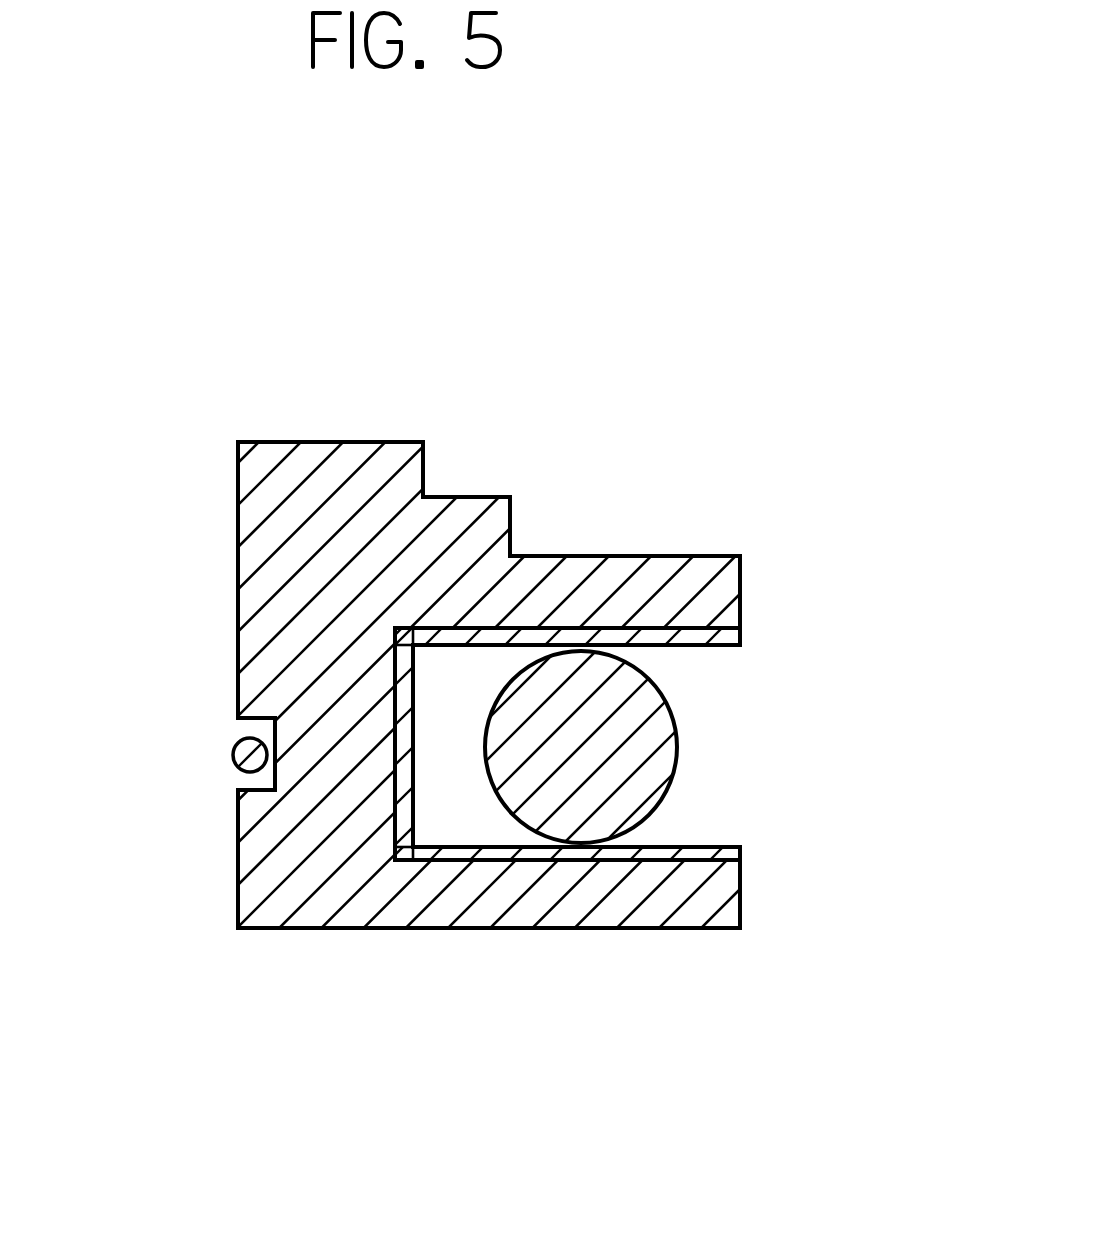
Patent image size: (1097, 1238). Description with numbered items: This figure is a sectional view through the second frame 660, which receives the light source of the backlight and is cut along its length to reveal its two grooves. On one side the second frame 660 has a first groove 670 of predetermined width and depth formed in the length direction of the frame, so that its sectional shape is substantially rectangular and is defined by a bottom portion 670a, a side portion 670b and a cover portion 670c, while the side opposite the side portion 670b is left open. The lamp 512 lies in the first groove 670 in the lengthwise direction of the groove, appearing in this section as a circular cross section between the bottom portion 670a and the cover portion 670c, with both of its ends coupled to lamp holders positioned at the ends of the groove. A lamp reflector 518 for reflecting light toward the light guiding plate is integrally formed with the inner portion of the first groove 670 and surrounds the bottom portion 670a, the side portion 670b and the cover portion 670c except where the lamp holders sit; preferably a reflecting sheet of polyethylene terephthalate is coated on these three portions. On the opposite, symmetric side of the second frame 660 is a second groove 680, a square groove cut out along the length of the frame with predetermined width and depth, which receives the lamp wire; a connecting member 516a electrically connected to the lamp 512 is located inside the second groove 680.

The second frame 660 is at (352, 465).
The first groove 670 is at (718, 717).
The bottom portion 670a is at (700, 846).
The side portion 670b is at (398, 852).
The cover portion 670c is at (700, 648).
The lamp 512 is at (655, 755).
The second groove 680 is at (225, 733).
The connecting member 516a is at (238, 775).
The lamp reflector 518 is at (413, 787).